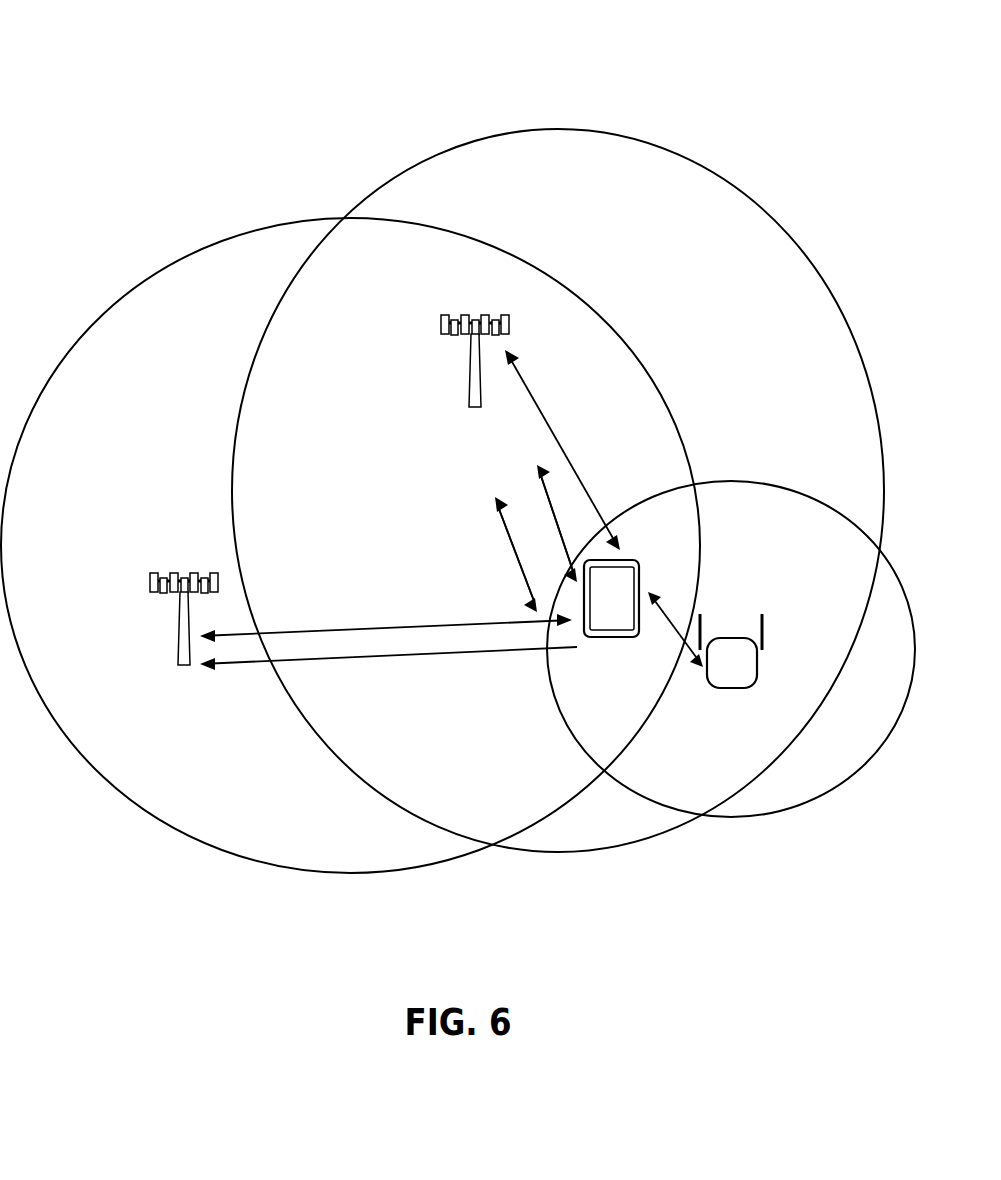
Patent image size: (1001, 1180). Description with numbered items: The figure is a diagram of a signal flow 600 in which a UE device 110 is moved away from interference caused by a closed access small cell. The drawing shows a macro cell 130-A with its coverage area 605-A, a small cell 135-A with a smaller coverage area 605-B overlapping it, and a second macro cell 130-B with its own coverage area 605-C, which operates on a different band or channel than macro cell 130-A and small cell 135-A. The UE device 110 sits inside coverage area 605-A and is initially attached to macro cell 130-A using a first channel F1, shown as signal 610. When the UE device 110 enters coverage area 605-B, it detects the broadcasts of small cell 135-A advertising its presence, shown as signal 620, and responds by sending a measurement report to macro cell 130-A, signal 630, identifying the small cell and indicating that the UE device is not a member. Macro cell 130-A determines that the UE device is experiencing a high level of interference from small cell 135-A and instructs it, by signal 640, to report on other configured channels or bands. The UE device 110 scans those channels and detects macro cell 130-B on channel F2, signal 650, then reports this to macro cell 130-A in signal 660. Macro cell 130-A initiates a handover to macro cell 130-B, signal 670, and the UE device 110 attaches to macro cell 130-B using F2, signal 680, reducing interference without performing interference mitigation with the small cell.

The signal flow 600 is at (126, 48).
The UE device 110 is at (612, 637).
The macro cell 130-A is at (475, 407).
The macro cell 130-B is at (184, 665).
The small cell 135-A is at (730, 688).
The coverage area 605-A is at (583, 852).
The coverage area 605-B is at (768, 815).
The coverage area 605-C is at (343, 873).
The signal 610 is at (562, 450).
The signal 620 is at (672, 629).
The signal 630 is at (558, 523).
The signal 640 is at (556, 523).
The signal 650 is at (386, 628).
The signal 660 is at (513, 554).
The signal 670 is at (511, 555).
The signal 680 is at (388, 656).